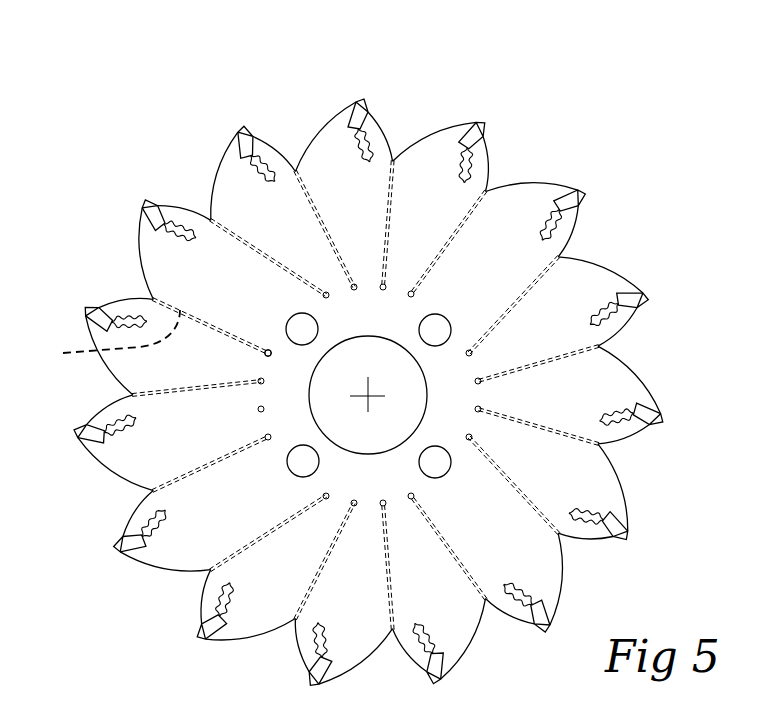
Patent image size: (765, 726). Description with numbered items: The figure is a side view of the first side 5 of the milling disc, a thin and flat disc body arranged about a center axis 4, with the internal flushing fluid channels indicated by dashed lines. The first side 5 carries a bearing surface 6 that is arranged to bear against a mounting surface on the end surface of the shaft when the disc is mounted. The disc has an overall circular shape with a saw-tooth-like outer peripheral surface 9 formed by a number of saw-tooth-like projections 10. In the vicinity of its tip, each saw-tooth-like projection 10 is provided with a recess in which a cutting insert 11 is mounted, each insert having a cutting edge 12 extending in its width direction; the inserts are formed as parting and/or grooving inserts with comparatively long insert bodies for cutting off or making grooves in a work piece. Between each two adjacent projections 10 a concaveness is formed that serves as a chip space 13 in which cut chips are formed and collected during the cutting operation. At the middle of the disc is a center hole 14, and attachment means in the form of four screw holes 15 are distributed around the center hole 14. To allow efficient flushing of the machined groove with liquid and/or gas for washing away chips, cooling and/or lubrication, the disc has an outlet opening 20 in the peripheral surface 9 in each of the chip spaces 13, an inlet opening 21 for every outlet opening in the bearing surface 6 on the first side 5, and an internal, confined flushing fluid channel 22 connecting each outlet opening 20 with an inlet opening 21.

The center axis 4 is at (366, 396).
The first side 5 is at (143, 448).
The bearing surface 6 is at (385, 487).
The saw-tooth-like outer peripheral surface 9 is at (613, 270).
The saw-tooth-like projection 10 is at (537, 198).
The cutting insert 11 is at (625, 297).
The cutting edge 12 is at (645, 306).
The chip space 13 is at (415, 107).
The center hole 14 is at (413, 392).
The screw hole 15 is at (288, 466).
The outlet opening 20 is at (145, 296).
The inlet opening 21 is at (270, 353).
The internal flushing fluid channel 22 is at (106, 338).